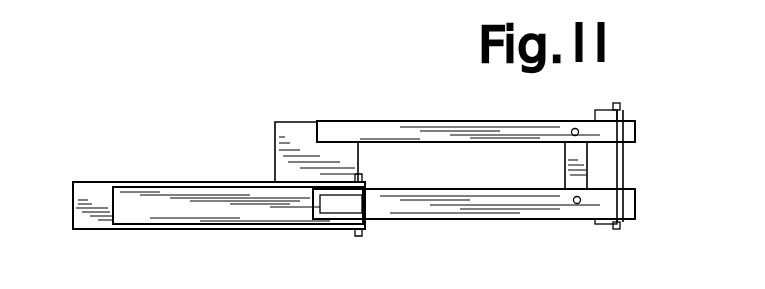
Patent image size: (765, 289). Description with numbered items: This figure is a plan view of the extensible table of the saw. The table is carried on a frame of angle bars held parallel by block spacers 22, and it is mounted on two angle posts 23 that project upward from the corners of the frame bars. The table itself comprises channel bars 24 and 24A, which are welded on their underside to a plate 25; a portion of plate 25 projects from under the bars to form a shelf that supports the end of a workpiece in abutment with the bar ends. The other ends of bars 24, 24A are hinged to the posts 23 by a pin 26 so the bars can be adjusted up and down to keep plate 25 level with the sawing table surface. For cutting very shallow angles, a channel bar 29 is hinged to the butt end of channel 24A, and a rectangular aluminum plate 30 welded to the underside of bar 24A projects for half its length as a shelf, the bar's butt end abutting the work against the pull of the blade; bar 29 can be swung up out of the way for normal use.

The block spacer 22 is at (600, 158).
The angle post 23 is at (625, 220).
The channel bar 24 is at (420, 135).
The channel bar 24A is at (508, 200).
The plate 25 is at (293, 135).
The pin 26 is at (624, 173).
The channel bar 29 is at (240, 198).
The rectangular aluminum plate 30 is at (82, 205).